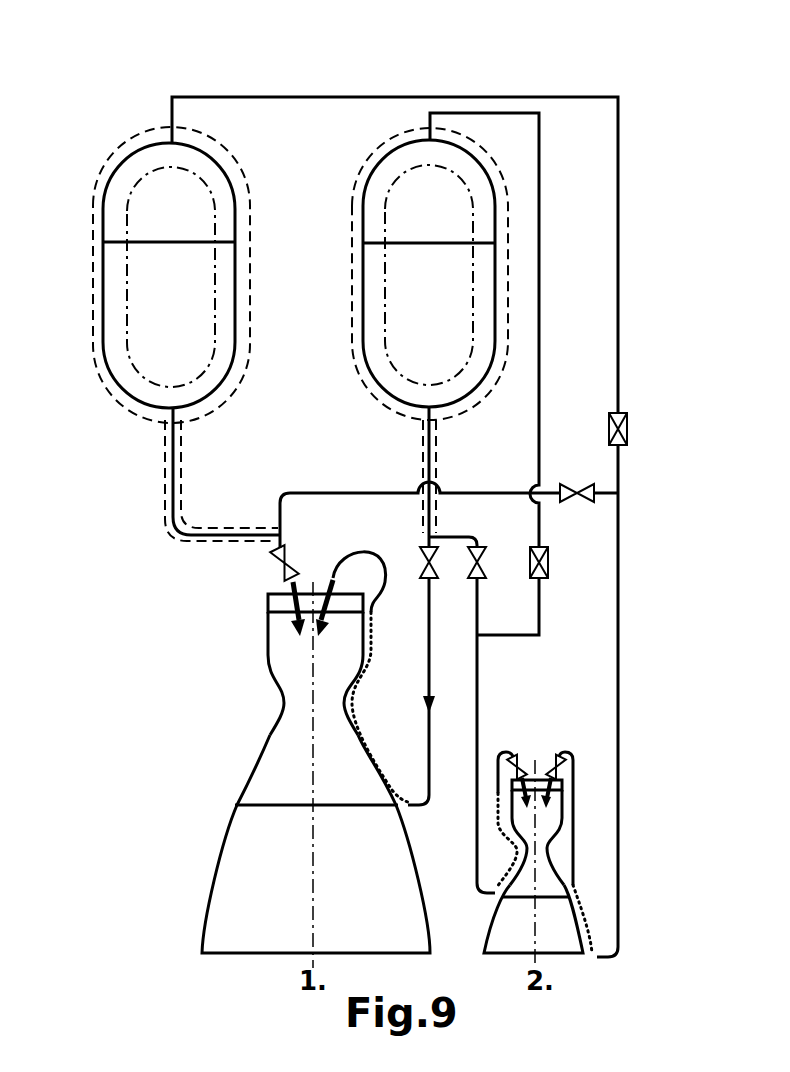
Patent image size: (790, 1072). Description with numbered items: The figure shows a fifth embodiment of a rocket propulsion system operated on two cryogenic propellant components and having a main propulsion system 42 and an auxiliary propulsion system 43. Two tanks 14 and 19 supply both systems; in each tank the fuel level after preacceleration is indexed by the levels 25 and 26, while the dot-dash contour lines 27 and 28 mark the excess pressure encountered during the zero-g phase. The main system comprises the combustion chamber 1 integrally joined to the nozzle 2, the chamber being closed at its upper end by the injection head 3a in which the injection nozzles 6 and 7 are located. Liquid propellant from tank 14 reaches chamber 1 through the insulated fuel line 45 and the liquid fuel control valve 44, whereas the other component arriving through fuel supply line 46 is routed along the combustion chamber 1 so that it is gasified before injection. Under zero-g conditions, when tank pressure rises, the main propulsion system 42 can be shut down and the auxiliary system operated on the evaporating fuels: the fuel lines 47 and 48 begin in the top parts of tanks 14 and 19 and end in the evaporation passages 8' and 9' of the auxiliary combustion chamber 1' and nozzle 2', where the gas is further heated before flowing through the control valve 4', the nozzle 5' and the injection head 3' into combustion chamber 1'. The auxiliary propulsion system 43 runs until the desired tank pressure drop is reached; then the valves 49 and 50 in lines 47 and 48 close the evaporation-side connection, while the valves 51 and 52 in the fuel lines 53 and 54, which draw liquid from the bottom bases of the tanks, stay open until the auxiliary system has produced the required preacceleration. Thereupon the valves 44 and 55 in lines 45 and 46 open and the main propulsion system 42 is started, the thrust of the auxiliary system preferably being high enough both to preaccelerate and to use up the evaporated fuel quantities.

The fuel line 47 is at (348, 95).
The fuel line 48 is at (540, 190).
The fuel tank 14 is at (103, 323).
The fuel level 25 is at (165, 241).
The dot-dash contour line 27 is at (215, 197).
The fuel tank 19 is at (497, 305).
The fuel level 26 is at (426, 242).
The dot-dash contour line 28 is at (465, 183).
The fuel line 45 is at (177, 470).
The fuel supply line 46 is at (430, 470).
The fuel line 54 is at (510, 493).
The valve 52 is at (577, 490).
The valve 50 is at (627, 428).
The fuel line 53 is at (457, 537).
The valve 55 is at (439, 562).
The valve 51 is at (486, 562).
The valve 49 is at (548, 562).
The liquid fuel control valve 44 is at (276, 562).
The injector head 3a is at (268, 610).
The injection nozzle 6 is at (296, 615).
The injection nozzle 7 is at (333, 615).
The combustion chamber 1 is at (288, 775).
The nozzle 2 is at (300, 844).
The main propulsion system 42 is at (237, 786).
The injection head 3' is at (597, 774).
The combustion chamber 1' is at (597, 864).
The auxiliary propulsion system 43 is at (548, 858).
The nozzle 2' is at (583, 919).
The control valve 4' is at (517, 758).
The nozzle 5' is at (561, 796).
The evaporation passages 8' is at (482, 840).
The evaporation passages 9' is at (628, 919).